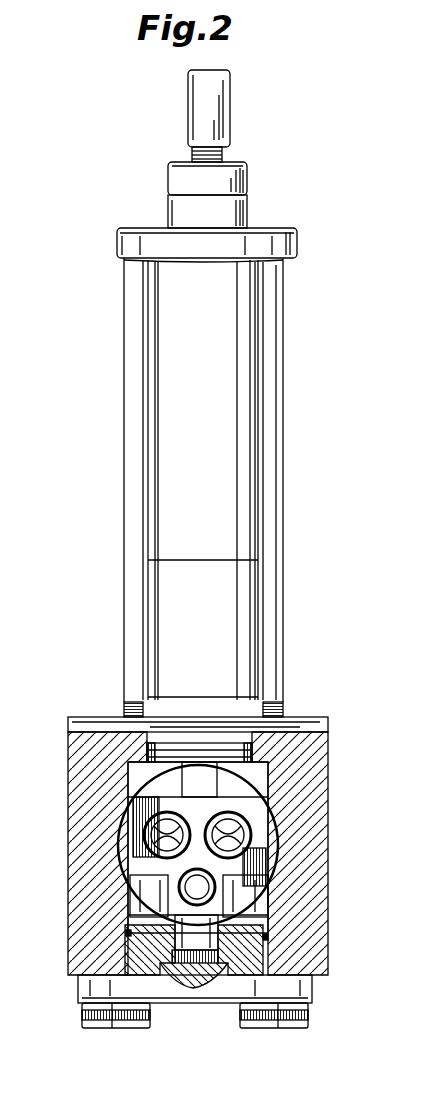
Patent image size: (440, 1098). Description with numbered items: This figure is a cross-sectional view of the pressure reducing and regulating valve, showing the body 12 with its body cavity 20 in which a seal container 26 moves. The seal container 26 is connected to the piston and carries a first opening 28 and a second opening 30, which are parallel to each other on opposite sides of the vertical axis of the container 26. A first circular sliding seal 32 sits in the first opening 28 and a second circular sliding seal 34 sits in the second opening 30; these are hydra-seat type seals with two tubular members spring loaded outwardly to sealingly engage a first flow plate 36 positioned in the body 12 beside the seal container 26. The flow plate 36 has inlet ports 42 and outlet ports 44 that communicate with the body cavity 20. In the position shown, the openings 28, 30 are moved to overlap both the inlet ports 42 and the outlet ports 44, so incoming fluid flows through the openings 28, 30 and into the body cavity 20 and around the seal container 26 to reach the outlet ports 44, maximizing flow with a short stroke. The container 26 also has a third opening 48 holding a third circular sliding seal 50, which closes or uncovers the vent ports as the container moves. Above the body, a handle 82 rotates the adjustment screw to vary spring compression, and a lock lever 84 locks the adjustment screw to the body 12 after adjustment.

The body 12 is at (330, 727).
The body cavity 20 is at (135, 913).
The seal container 26 is at (257, 812).
The first opening 28 is at (148, 836).
The second opening 30 is at (243, 835).
The first circular sliding seal 32 is at (153, 848).
The second circular sliding seal 34 is at (247, 849).
The first flow plate 36 is at (245, 898).
The inlet ports 42 is at (145, 810).
The outlet ports 44 is at (127, 877).
The third opening 48 is at (207, 890).
The third circular sliding seal 50 is at (218, 908).
The handle 82 is at (232, 105).
The lock lever 84 is at (247, 177).